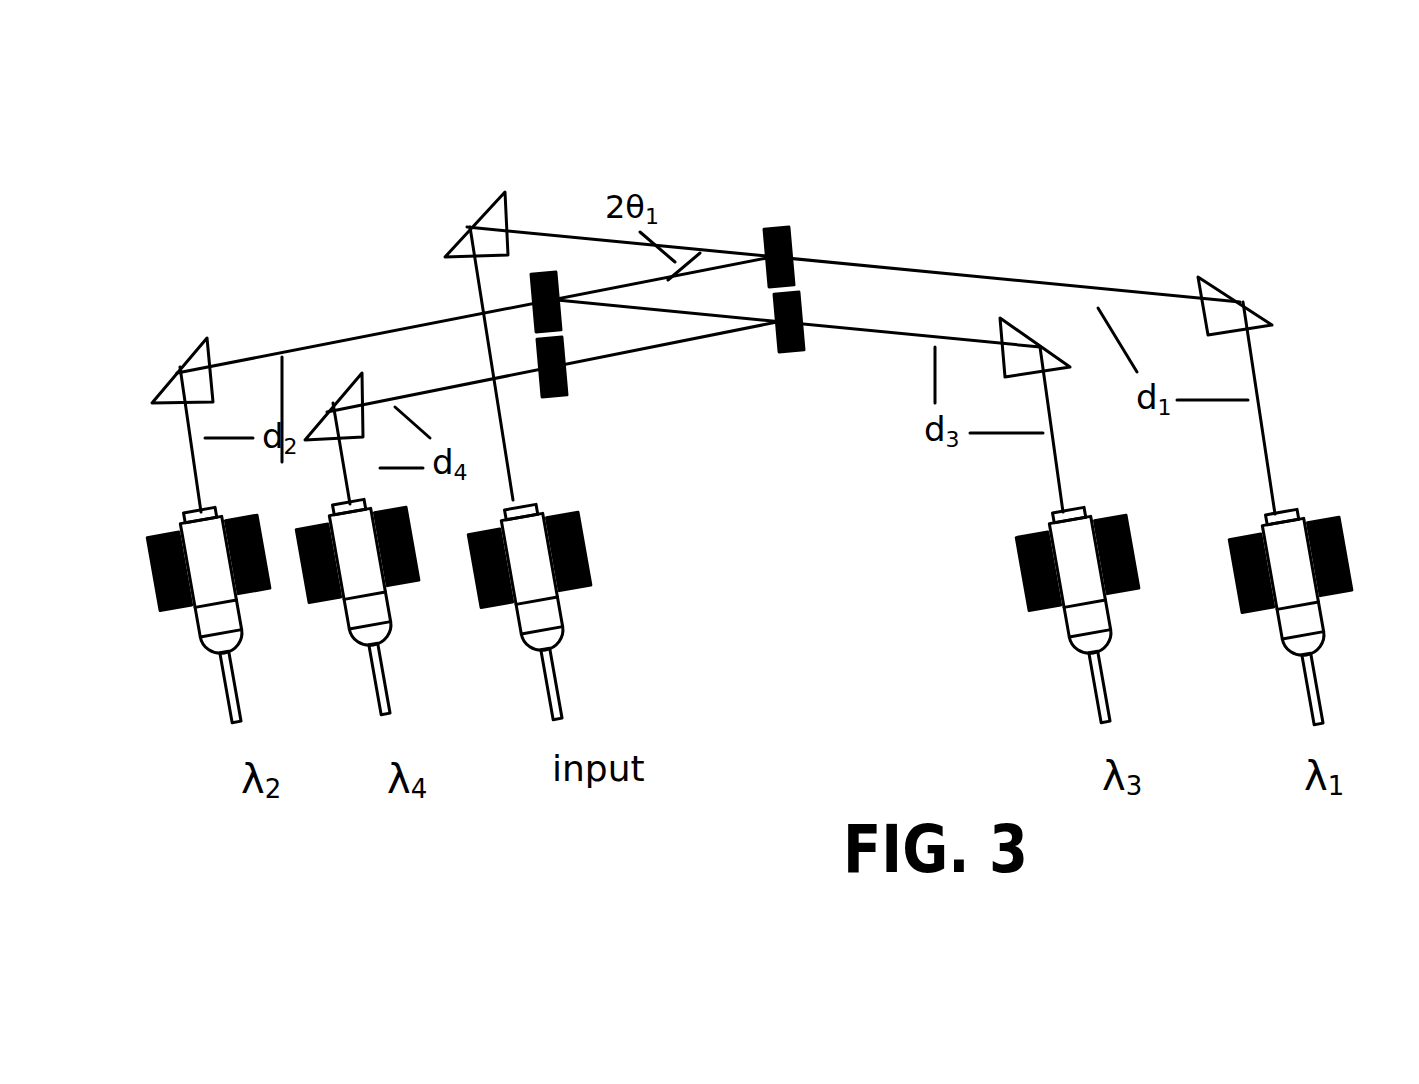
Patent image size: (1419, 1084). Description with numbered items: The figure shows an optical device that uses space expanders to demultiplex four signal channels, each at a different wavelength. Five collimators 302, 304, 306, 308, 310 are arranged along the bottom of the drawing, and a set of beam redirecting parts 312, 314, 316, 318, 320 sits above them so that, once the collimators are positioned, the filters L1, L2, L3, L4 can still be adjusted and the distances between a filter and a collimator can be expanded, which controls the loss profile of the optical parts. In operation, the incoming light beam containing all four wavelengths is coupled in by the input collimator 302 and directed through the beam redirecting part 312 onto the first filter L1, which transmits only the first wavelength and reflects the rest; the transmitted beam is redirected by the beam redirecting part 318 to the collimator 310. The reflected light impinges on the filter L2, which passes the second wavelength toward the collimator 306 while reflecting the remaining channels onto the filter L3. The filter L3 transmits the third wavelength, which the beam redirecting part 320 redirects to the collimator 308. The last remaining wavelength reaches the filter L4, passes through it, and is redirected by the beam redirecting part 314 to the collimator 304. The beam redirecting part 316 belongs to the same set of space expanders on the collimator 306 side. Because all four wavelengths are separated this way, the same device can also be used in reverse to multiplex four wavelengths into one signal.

The collimator 302 is at (548, 612).
The collimator 304 is at (372, 607).
The collimator 306 is at (221, 615).
The collimator 308 is at (1092, 615).
The collimator 310 is at (1305, 617).
The beam redirecting part 312 is at (468, 213).
The beam redirecting part 314 is at (346, 375).
The beam redirecting part 316 is at (172, 358).
The beam redirecting part 318 is at (1237, 288).
The beam redirecting part 320 is at (1027, 320).
The first filter L1 is at (797, 240).
The filter L2 is at (568, 291).
The filter L3 is at (755, 311).
The filter L4 is at (576, 354).